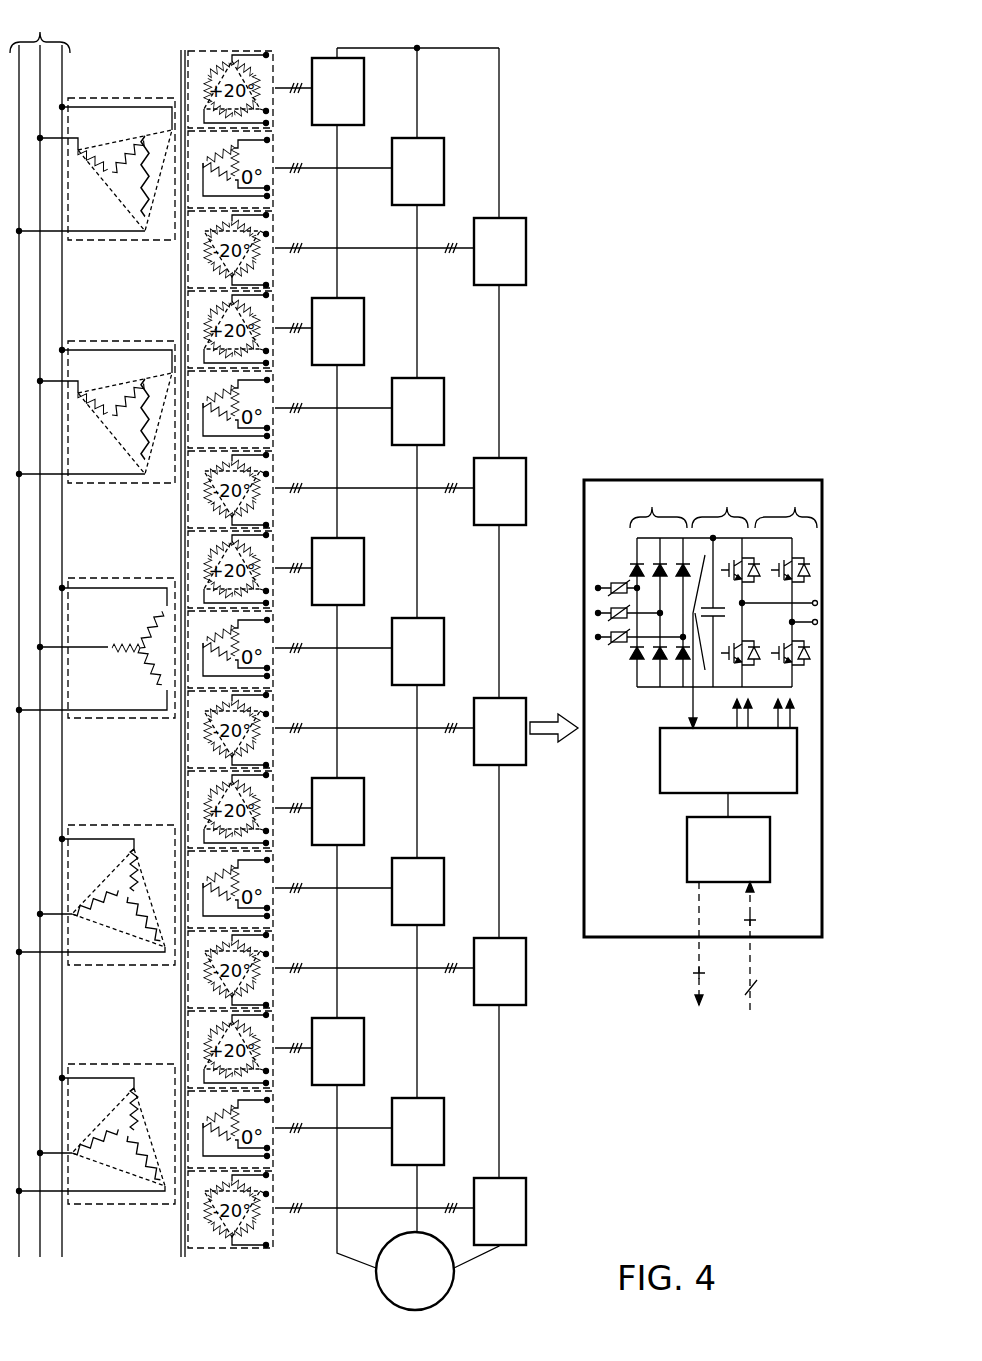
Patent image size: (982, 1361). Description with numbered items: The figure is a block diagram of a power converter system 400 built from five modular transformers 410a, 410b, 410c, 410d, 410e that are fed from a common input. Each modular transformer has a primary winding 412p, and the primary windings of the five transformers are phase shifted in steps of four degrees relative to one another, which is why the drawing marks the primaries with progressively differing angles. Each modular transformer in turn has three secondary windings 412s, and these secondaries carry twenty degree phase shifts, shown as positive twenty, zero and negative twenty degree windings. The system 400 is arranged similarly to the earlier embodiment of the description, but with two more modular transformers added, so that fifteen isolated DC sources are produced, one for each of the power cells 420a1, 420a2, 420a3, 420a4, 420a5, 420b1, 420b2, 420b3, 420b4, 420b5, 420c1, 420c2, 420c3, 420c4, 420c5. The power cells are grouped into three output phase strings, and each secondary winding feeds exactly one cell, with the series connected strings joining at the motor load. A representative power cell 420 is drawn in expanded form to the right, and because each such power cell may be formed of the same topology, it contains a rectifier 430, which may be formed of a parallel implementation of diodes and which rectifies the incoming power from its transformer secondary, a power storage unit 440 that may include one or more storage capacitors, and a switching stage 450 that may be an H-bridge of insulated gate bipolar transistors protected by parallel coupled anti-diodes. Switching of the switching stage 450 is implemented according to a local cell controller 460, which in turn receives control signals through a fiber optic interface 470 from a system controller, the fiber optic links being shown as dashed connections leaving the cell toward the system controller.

The system 400 is at (140, 27).
The modular transformer 410a is at (130, 98).
The modular transformer 410b is at (122, 483).
The modular transformer 410c is at (122, 718).
The modular transformer 410d is at (119, 965).
The modular transformer 410e is at (119, 1205).
The primary winding 412p is at (144, 240).
The secondary windings 412s is at (230, 50).
The power cell 420 is at (644, 937).
The power cell 420a1 is at (330, 58).
The power cell 420a2 is at (346, 298).
The power cell 420a3 is at (346, 538).
The power cell 420a4 is at (346, 778).
The power cell 420a5 is at (346, 1018).
The power cell 420b1 is at (428, 138).
The power cell 420b2 is at (428, 378).
The power cell 420b3 is at (428, 618).
The power cell 420b4 is at (428, 858).
The power cell 420b5 is at (428, 1098).
The power cell 420c1 is at (510, 218).
The power cell 420c2 is at (510, 458).
The power cell 420c3 is at (510, 698).
The power cell 420c4 is at (510, 938).
The power cell 420c5 is at (510, 1178).
The motor / rectifier section 430 is at (453, 1278).
The DC link capacitor 440 is at (727, 507).
The inverter bridge 450 is at (795, 507).
The local cell control 460 is at (660, 762).
The fiber optic interface 470 is at (687, 852).